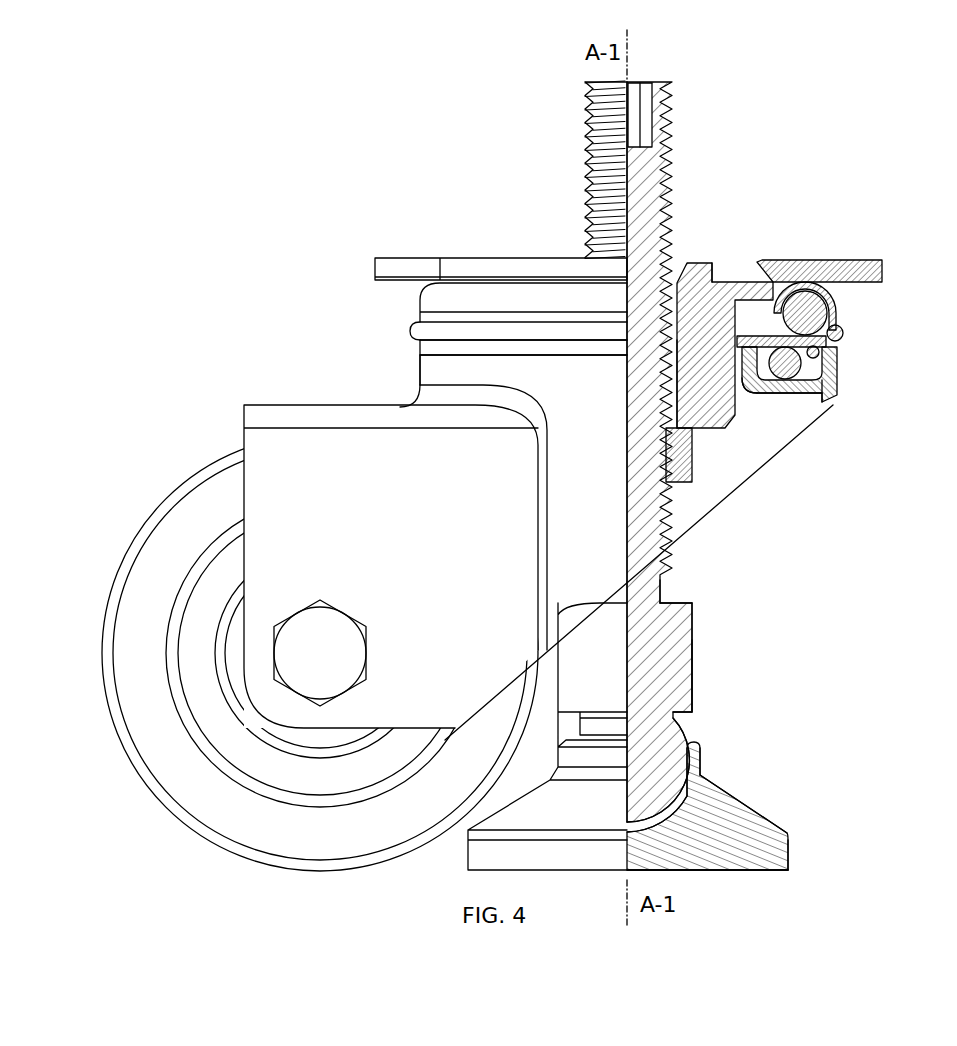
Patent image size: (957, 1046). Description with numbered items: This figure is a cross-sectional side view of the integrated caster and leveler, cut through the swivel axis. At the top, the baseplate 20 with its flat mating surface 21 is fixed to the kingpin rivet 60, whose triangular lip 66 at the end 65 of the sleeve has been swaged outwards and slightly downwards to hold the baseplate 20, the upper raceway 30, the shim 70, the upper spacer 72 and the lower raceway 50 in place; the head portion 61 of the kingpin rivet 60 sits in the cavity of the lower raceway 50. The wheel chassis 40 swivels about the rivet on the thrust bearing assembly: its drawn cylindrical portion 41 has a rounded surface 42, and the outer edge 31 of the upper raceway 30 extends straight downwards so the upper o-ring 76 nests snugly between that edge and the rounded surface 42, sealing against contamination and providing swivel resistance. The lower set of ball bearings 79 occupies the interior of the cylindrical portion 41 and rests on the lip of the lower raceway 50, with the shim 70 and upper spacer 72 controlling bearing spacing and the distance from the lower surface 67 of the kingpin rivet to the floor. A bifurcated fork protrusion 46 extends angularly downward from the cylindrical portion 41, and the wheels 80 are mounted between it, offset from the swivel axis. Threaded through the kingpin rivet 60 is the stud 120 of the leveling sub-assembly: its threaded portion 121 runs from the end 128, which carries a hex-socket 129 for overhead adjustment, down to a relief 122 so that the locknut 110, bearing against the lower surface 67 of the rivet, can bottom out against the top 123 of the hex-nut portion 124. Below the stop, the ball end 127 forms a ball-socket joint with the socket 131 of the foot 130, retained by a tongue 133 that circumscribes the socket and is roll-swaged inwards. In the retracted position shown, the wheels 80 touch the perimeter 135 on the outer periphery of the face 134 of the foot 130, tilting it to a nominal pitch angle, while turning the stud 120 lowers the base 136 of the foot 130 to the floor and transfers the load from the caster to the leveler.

The baseplate 20 is at (884, 254).
The flat mating surface 21 is at (825, 263).
The upper raceway 30 is at (411, 301).
The outer edge 31 is at (838, 320).
The wheel chassis 40 is at (410, 346).
The drawn cylindrical portion 41 is at (418, 375).
The rounded surface 42 is at (840, 352).
The bifurcated fork protrusion 46 is at (278, 402).
The lower raceway 50 is at (840, 407).
The kingpin rivet 60 is at (745, 403).
The head portion 61 is at (742, 408).
The end of the sleeve 65 is at (700, 268).
The triangular lip 66 is at (715, 270).
The lower surface of the kingpin rivet 67 is at (693, 437).
The shim 70 is at (837, 375).
The upper spacer 72 is at (802, 398).
The upper o-ring 76 is at (850, 326).
The lower set of ball bearings 79 is at (838, 367).
The wheels 80 is at (182, 468).
The locknut 110 is at (720, 470).
The stud 120 is at (704, 628).
The threaded portion 121 is at (668, 200).
The relief 122 is at (670, 585).
The top of the stop 123 is at (665, 600).
The hex-nut portion 124 is at (690, 683).
The ball end 127 is at (680, 735).
The end of the stud 128 is at (640, 86).
The hex-socket 129 is at (647, 100).
The foot 130 is at (742, 788).
The socket 131 is at (690, 780).
The tongue 133 is at (698, 752).
The face of the foot 134 is at (762, 812).
The perimeter 135 is at (790, 840).
The base of the foot 136 is at (775, 872).